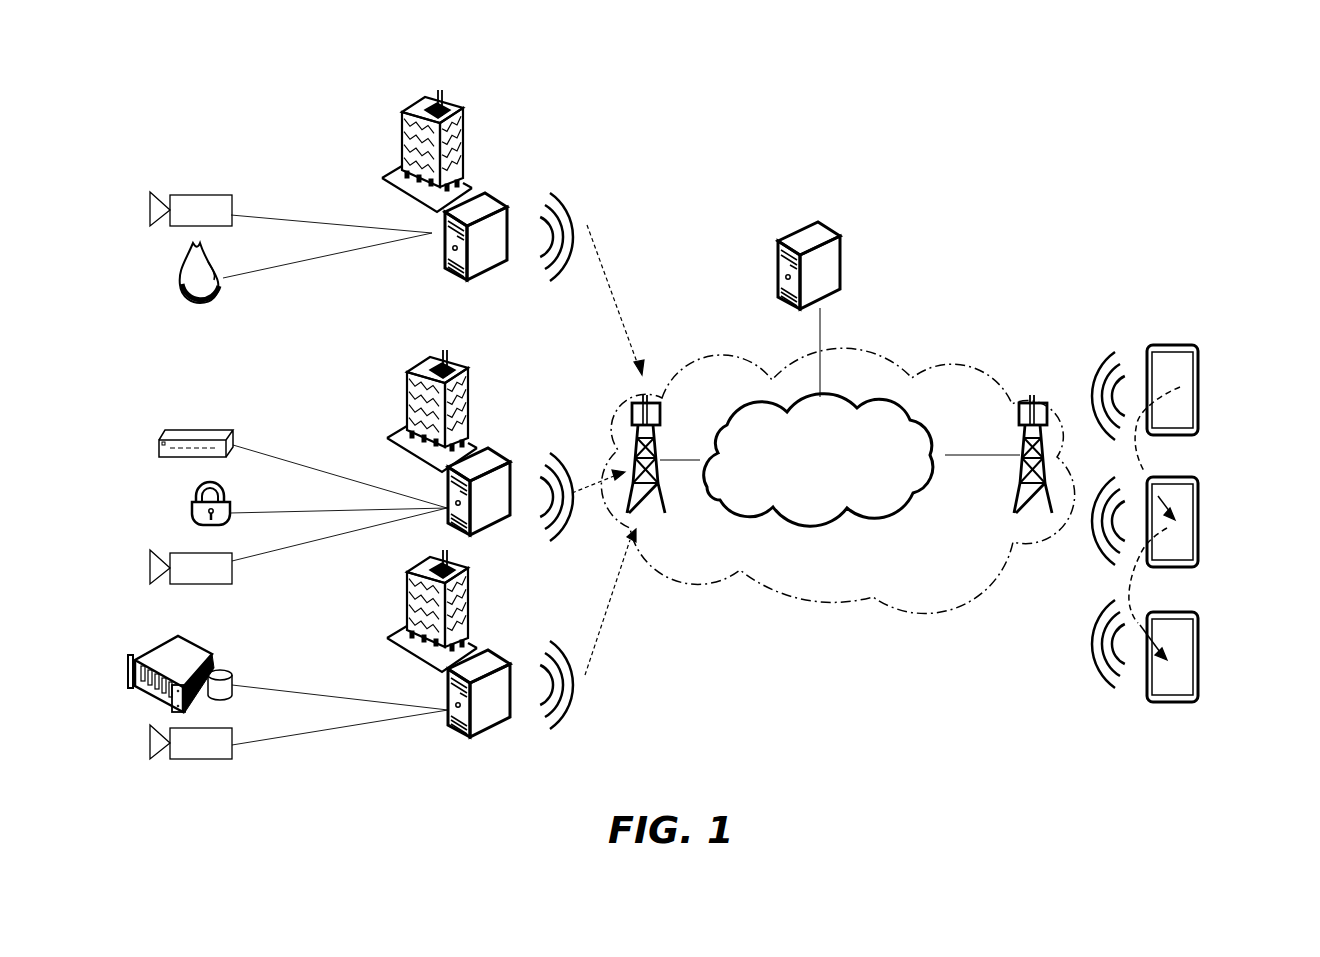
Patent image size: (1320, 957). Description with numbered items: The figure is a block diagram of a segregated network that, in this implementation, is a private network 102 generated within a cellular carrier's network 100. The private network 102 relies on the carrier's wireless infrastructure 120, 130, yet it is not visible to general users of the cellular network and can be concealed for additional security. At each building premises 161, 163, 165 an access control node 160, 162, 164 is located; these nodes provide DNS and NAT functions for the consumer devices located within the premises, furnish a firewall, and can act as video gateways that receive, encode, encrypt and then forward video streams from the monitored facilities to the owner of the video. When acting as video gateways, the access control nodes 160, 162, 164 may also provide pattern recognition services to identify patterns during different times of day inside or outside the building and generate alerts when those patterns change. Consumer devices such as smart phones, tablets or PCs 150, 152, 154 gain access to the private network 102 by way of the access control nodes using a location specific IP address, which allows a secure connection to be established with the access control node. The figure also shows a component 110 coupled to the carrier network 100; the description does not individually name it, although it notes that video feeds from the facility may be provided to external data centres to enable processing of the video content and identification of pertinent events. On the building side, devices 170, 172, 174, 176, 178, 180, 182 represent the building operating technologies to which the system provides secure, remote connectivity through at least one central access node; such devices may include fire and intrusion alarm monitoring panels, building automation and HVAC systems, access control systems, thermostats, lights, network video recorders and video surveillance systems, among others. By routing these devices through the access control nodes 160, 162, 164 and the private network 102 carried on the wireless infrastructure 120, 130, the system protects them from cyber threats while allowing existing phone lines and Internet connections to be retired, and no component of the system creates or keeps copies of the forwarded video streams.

The cellular carrier's network 100 is at (813, 520).
The private network 102 is at (867, 598).
The video processing server 110 is at (840, 247).
The wireless infrastructure 120 is at (627, 400).
The wireless infrastructure 130 is at (1017, 400).
The consumer device 150 is at (1177, 345).
The consumer device 152 is at (1177, 477).
The consumer device 154 is at (1167, 612).
The access control node 160 is at (477, 193).
The building premises 161 is at (458, 123).
The access control node 162 is at (493, 448).
The building premises 163 is at (455, 363).
The access control node 164 is at (487, 662).
The building premises 165 is at (465, 588).
The device 170 is at (222, 203).
The device 172 is at (222, 278).
The device 174 is at (230, 430).
The device 176 is at (215, 512).
The device 178 is at (220, 573).
The device 180 is at (208, 661).
The device 182 is at (220, 743).